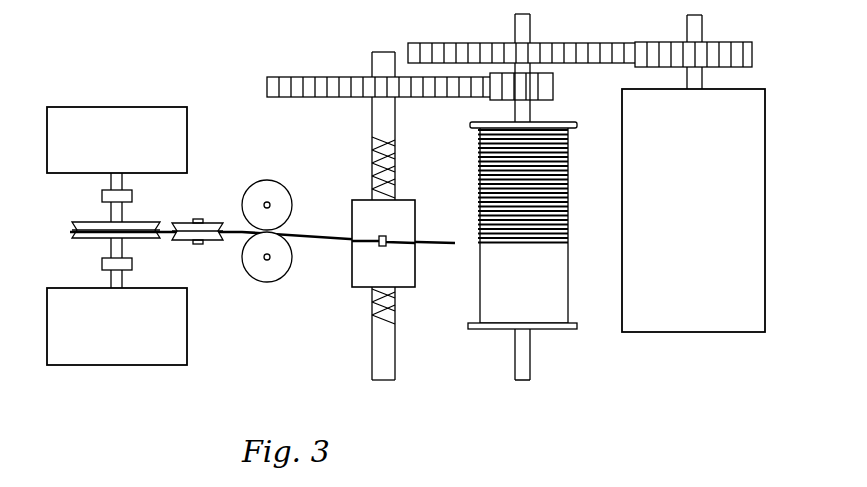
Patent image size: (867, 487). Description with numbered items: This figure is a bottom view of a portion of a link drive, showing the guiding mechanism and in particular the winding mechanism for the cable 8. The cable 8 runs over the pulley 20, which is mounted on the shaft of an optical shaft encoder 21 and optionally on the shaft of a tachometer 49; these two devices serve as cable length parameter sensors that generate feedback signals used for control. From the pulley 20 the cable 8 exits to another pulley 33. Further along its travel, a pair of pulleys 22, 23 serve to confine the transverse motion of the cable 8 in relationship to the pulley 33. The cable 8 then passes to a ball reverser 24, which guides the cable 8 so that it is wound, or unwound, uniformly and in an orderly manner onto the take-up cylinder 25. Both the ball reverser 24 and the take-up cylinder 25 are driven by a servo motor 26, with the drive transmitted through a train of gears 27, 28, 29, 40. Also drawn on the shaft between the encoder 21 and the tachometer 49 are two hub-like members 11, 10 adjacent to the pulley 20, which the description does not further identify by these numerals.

The cable 8 is at (433, 246).
The lower hub 10 is at (102, 262).
The upper hub 11 is at (113, 217).
The pulley 20 is at (135, 225).
The optical shaft encoder 21 is at (88, 156).
The pulley 22 is at (284, 201).
The pulley 23 is at (273, 277).
The ball reverser 24 is at (408, 220).
The take-up cylinder 25 is at (506, 321).
The servo motor 26 is at (661, 241).
The gear 27 is at (707, 50).
The gear 28 is at (577, 45).
The gear 29 is at (555, 90).
The pulley 33 is at (205, 244).
The gear 40 is at (338, 77).
The tachometer 49 is at (88, 344).